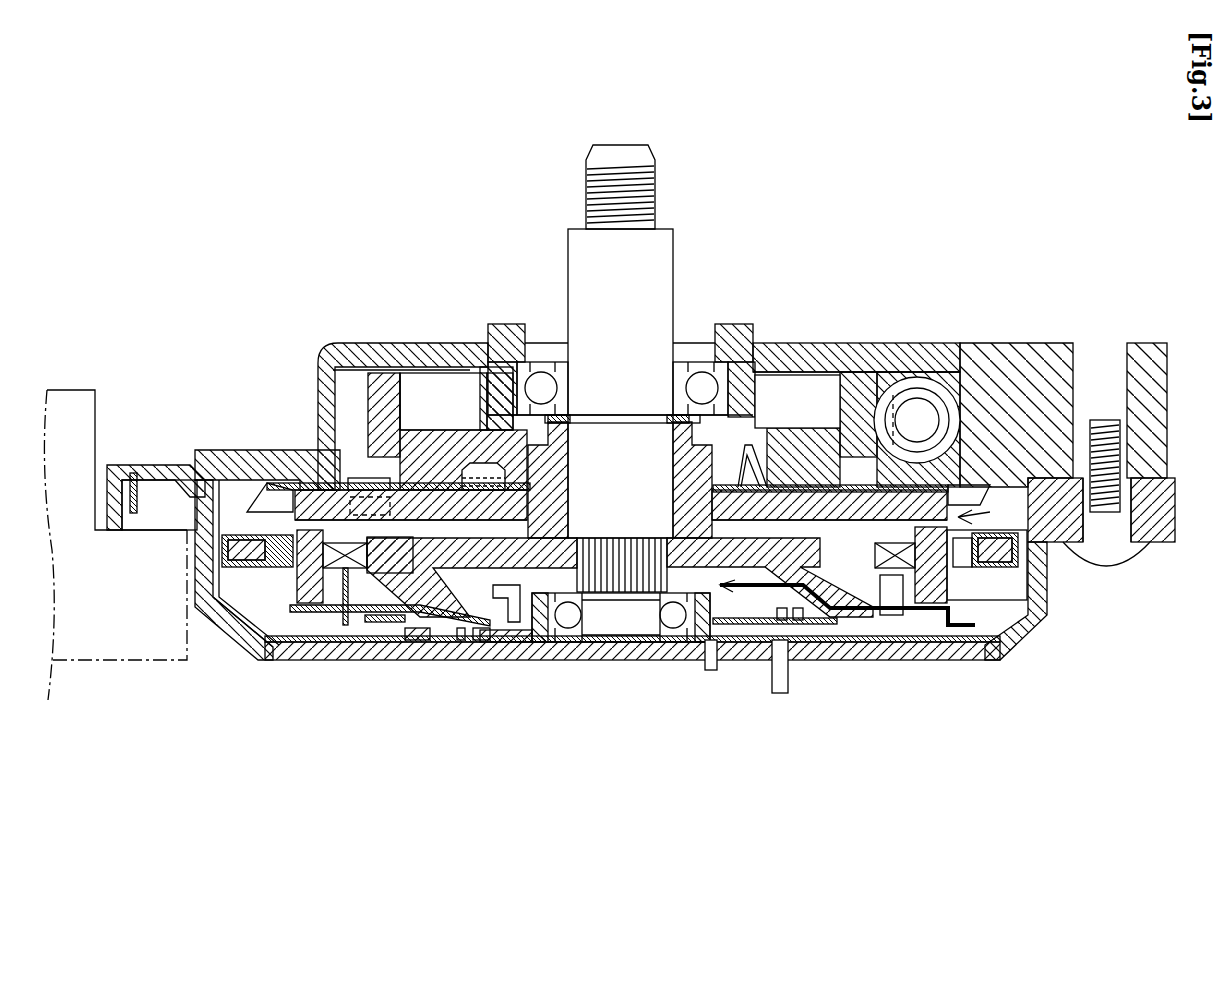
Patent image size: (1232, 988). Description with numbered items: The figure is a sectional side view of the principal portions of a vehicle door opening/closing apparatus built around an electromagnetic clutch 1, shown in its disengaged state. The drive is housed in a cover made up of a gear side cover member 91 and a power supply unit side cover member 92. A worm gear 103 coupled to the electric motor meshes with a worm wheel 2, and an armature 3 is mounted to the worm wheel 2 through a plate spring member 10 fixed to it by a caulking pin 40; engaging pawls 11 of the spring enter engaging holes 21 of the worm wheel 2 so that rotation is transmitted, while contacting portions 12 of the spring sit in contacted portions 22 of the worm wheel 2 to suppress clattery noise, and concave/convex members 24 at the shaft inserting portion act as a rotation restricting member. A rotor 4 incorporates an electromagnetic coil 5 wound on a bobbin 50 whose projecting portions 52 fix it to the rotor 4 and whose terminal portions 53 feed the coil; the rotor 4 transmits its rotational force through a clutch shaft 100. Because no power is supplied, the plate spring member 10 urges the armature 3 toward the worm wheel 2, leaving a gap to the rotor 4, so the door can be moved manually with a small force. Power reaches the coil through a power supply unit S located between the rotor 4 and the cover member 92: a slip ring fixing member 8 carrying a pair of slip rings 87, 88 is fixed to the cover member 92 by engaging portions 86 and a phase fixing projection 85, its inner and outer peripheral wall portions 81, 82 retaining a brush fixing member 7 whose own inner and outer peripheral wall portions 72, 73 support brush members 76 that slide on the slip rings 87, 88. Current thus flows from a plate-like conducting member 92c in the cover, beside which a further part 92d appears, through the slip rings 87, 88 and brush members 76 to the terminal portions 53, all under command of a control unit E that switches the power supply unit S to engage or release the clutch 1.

The electromagnetic clutch 1 is at (1050, 540).
The worm wheel 2 is at (370, 400).
The armature 3 is at (246, 452).
The rotor 4 is at (300, 590).
The electromagnetic coil 5 is at (945, 580).
The brush fixing member 7 is at (733, 580).
The slip ring fixing member 8 is at (880, 660).
The plate spring member 10 is at (962, 490).
The engaging pawls 11 is at (778, 470).
The contacting portions 12 is at (480, 470).
The engaging holes 21 is at (757, 430).
The contacted portions 22 is at (530, 484).
The concave/convex members 24 is at (580, 616).
The caulking pin 40 is at (355, 484).
The bobbin 50 is at (820, 590).
The projecting portions 52 is at (893, 615).
The terminal portions 53 is at (345, 622).
The inner peripheral wall portion 72 is at (525, 610).
The outer peripheral wall portion 73 is at (310, 625).
The brush members 76 is at (390, 625).
The inner peripheral wall portion 81 is at (545, 660).
The outer peripheral wall portion 82 is at (245, 640).
The phase fixing projection 85 is at (780, 695).
The engaging portions 86 is at (707, 672).
The slip ring 87 is at (490, 650).
The slip ring 88 is at (445, 660).
The gear side cover member 91 is at (382, 345).
The power supply unit side cover member 92 is at (1045, 625).
The plate-like conducting member 92c is at (178, 462).
The bracket pin 92d is at (127, 462).
The clutch shaft 100 is at (568, 252).
The worm gear 103 is at (921, 386).
The power supply unit S is at (461, 560).
The control unit E is at (95, 688).